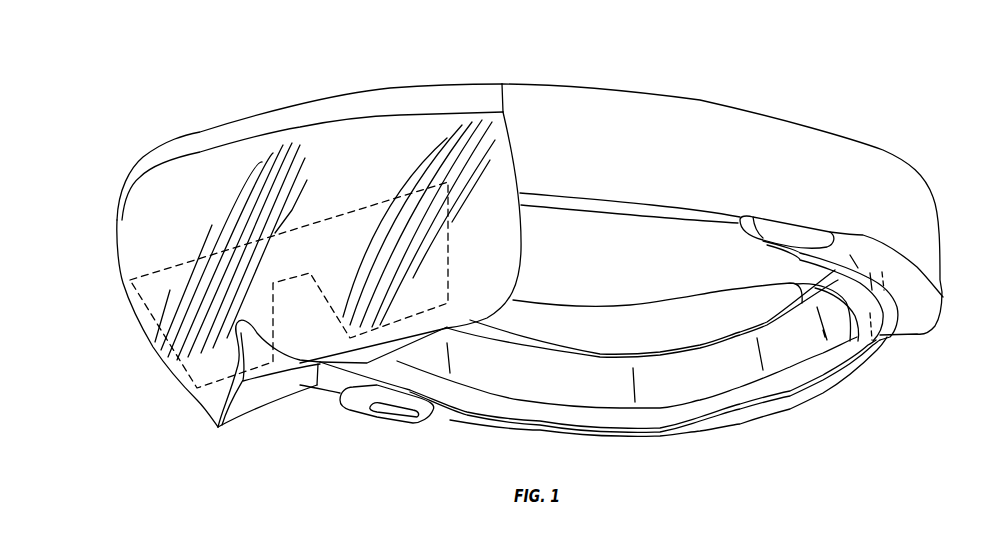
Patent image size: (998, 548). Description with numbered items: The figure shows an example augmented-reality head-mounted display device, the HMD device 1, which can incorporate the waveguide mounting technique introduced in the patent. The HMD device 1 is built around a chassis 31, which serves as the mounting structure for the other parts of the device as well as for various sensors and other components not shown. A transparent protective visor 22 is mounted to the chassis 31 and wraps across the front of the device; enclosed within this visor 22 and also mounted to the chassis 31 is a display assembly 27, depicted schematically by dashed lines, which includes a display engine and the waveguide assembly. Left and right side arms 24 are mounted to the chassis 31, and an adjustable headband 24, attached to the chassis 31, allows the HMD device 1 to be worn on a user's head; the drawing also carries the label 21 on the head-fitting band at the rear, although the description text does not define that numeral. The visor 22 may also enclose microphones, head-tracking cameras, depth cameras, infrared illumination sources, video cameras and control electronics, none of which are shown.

The HMD device 1 is at (168, 60).
The chassis 31 is at (143, 157).
The display assembly 27 is at (448, 252).
The transparent protective visor 22 is at (178, 389).
The adjustable headband 24 is at (933, 200).
The headband 21 is at (827, 390).